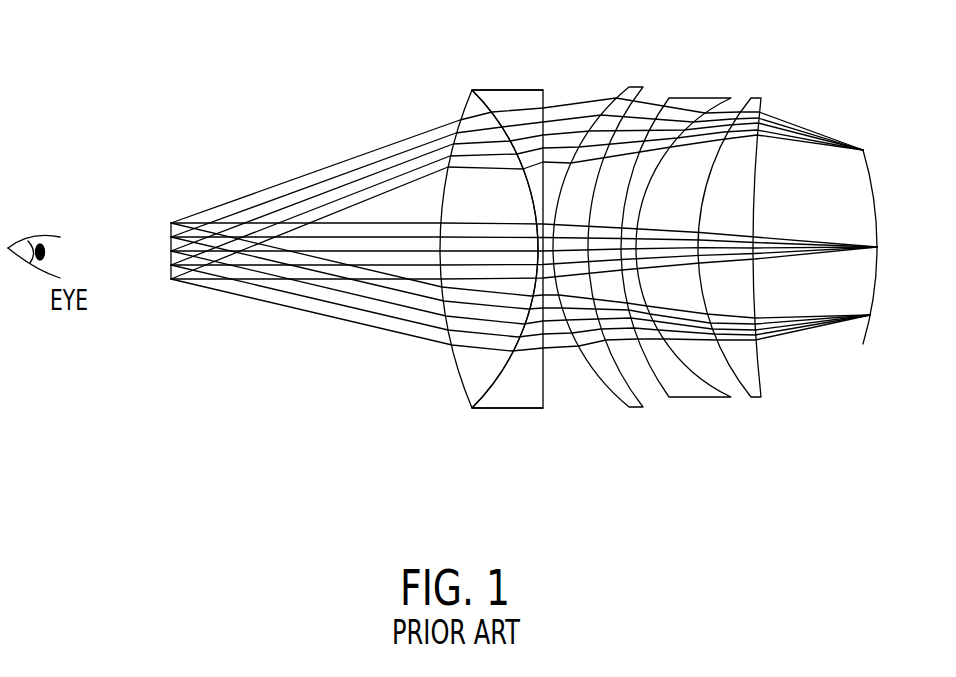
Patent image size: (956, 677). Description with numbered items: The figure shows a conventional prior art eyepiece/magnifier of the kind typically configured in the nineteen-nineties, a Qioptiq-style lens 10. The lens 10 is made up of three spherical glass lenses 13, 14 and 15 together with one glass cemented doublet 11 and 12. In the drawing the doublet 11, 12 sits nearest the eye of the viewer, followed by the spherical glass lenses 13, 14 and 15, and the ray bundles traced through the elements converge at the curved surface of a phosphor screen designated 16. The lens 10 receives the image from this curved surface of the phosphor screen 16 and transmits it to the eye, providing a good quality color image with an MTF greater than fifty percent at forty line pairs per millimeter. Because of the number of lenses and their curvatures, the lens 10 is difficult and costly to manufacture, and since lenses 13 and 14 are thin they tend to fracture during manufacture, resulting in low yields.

The lens 10 is at (567, 259).
The glass cemented doublet 11 is at (472, 371).
The glass cemented doublet 12 is at (522, 393).
The spherical glass lens 13 is at (608, 380).
The spherical glass lens 14 is at (688, 390).
The spherical glass lens 15 is at (755, 370).
The phosphor screen 16 is at (872, 175).